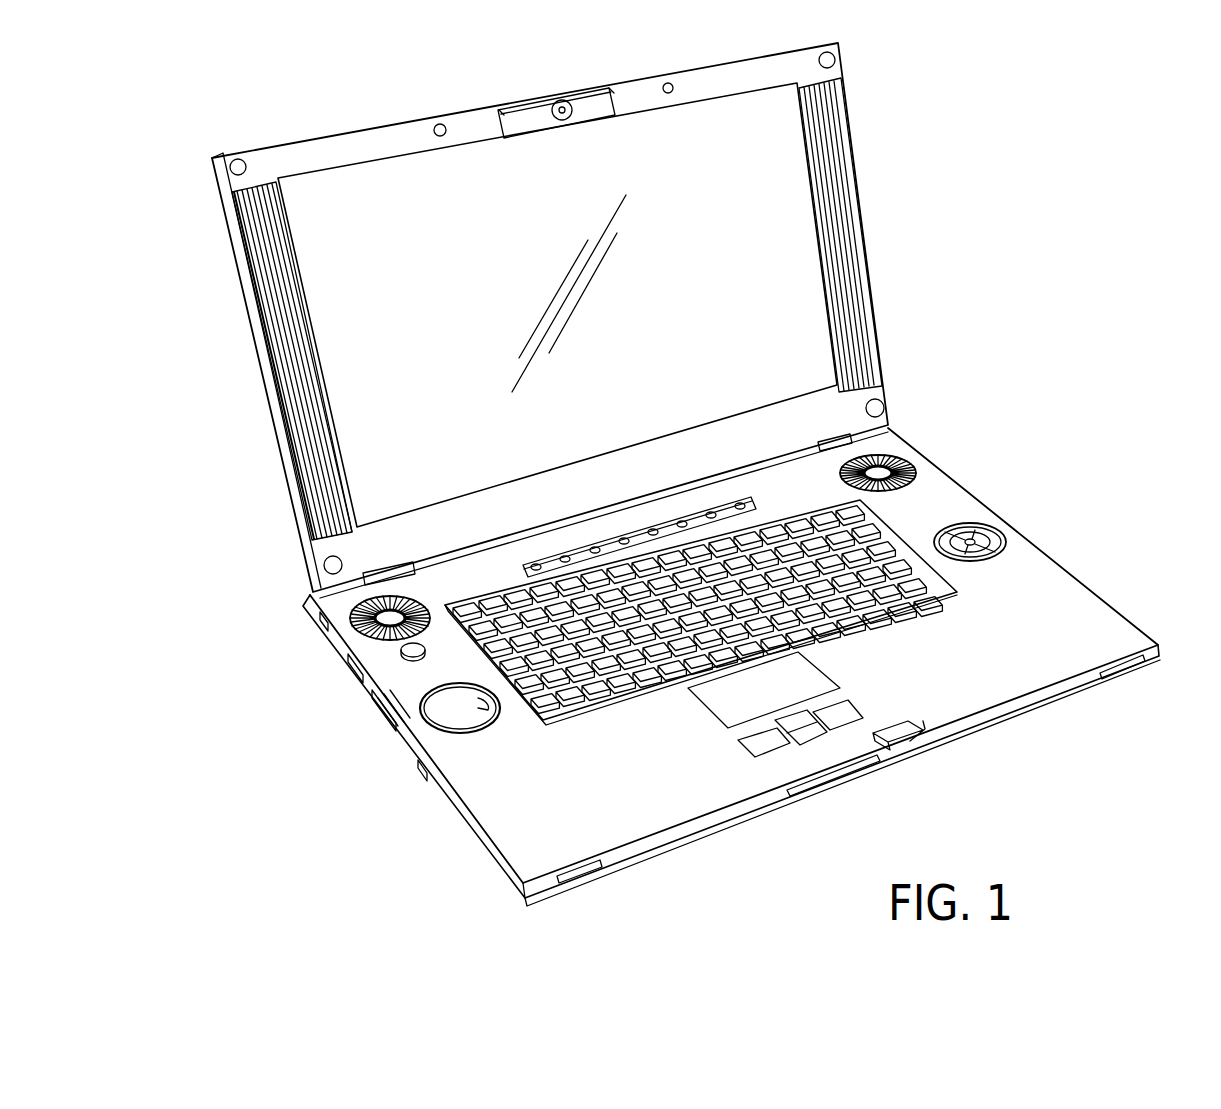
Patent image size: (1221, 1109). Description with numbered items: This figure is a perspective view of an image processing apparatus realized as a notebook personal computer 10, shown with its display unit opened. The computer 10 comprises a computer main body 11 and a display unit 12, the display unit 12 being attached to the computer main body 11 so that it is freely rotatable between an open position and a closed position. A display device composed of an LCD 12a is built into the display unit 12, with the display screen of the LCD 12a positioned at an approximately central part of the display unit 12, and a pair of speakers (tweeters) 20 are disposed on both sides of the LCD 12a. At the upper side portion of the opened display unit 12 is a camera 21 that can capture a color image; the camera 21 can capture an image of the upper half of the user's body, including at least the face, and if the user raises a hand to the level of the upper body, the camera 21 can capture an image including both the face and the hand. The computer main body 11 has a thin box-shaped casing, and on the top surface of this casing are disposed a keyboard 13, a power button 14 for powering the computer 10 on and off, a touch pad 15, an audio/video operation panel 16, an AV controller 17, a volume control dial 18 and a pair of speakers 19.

The notebook personal computer 10 is at (997, 452).
The computer main body 11 is at (1118, 606).
The display unit 12 is at (265, 402).
The LCD 12a is at (360, 205).
The keyboard 13 is at (548, 720).
The power button 14 is at (400, 649).
The touch pad 15 is at (740, 693).
The audio/video operation panel 16 is at (760, 505).
The AV controller 17 is at (998, 541).
The volume control dial 18 is at (440, 708).
The speakers 19 is at (350, 614).
The speakers (tweeters) 20 is at (288, 297).
The camera 21 is at (589, 103).